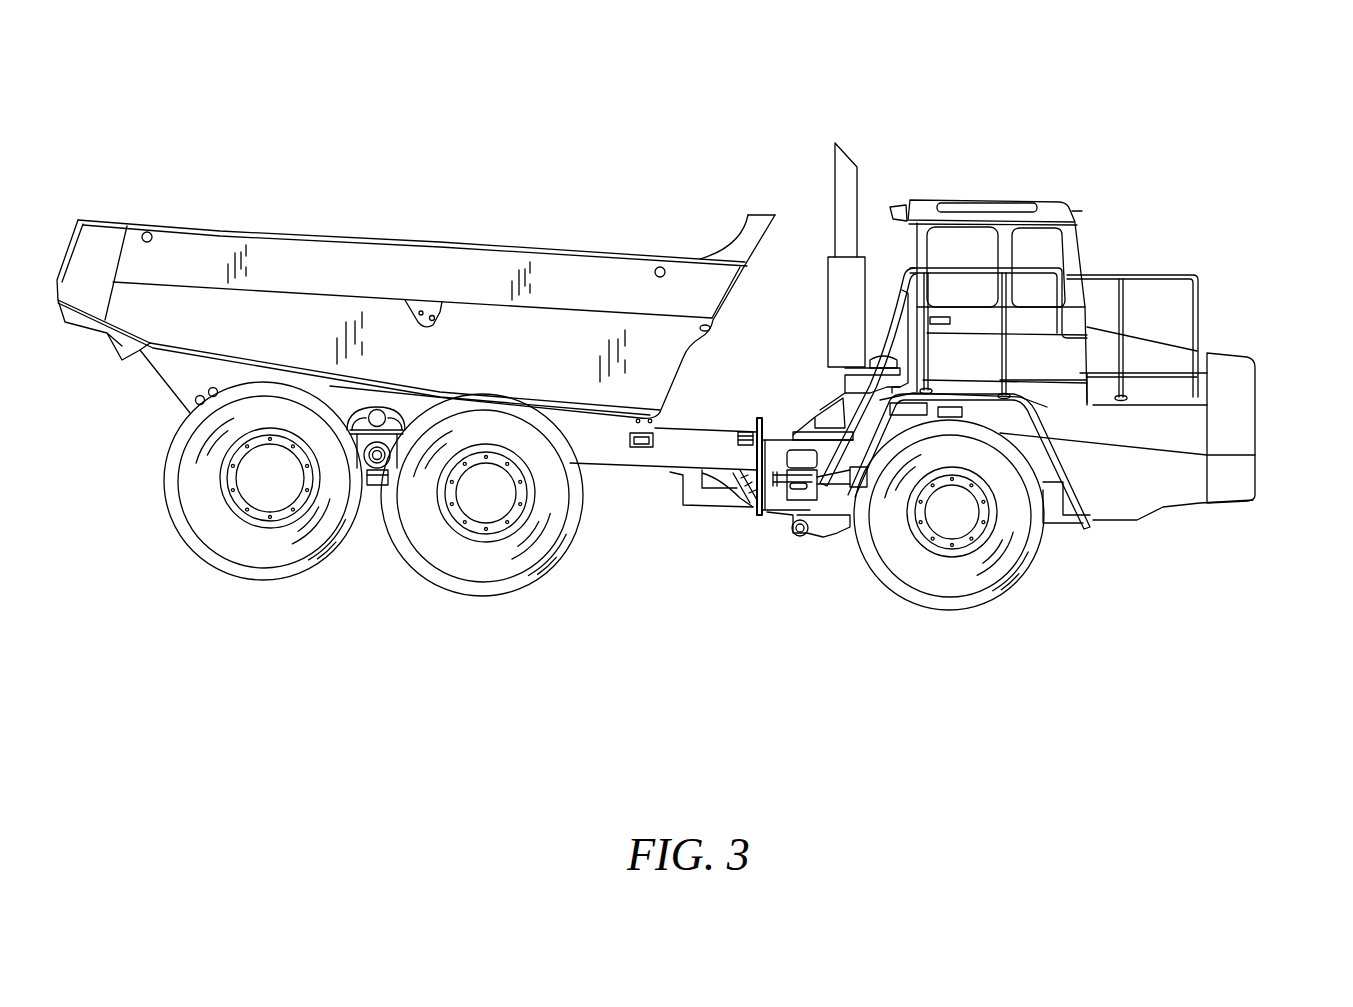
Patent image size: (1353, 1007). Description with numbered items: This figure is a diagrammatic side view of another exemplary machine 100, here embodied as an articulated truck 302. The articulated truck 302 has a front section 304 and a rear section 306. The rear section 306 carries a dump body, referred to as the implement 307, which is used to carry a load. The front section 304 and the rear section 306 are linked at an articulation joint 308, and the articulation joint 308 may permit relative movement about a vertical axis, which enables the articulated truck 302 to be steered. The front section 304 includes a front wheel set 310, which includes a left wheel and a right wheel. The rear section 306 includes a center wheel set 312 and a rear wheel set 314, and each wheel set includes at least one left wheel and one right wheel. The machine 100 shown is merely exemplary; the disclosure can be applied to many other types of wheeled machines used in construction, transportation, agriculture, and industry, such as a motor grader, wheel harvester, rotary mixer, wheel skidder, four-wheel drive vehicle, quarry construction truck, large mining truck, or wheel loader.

The machine 100 is at (1230, 148).
The articulated truck 302 is at (1000, 196).
The front section 304 is at (1078, 225).
The rear section 306 is at (508, 234).
The implement 307 is at (350, 230).
The articulation joint 308 is at (786, 519).
The front wheel set 310 is at (950, 611).
The center wheel set 312 is at (480, 597).
The rear wheel set 314 is at (263, 581).